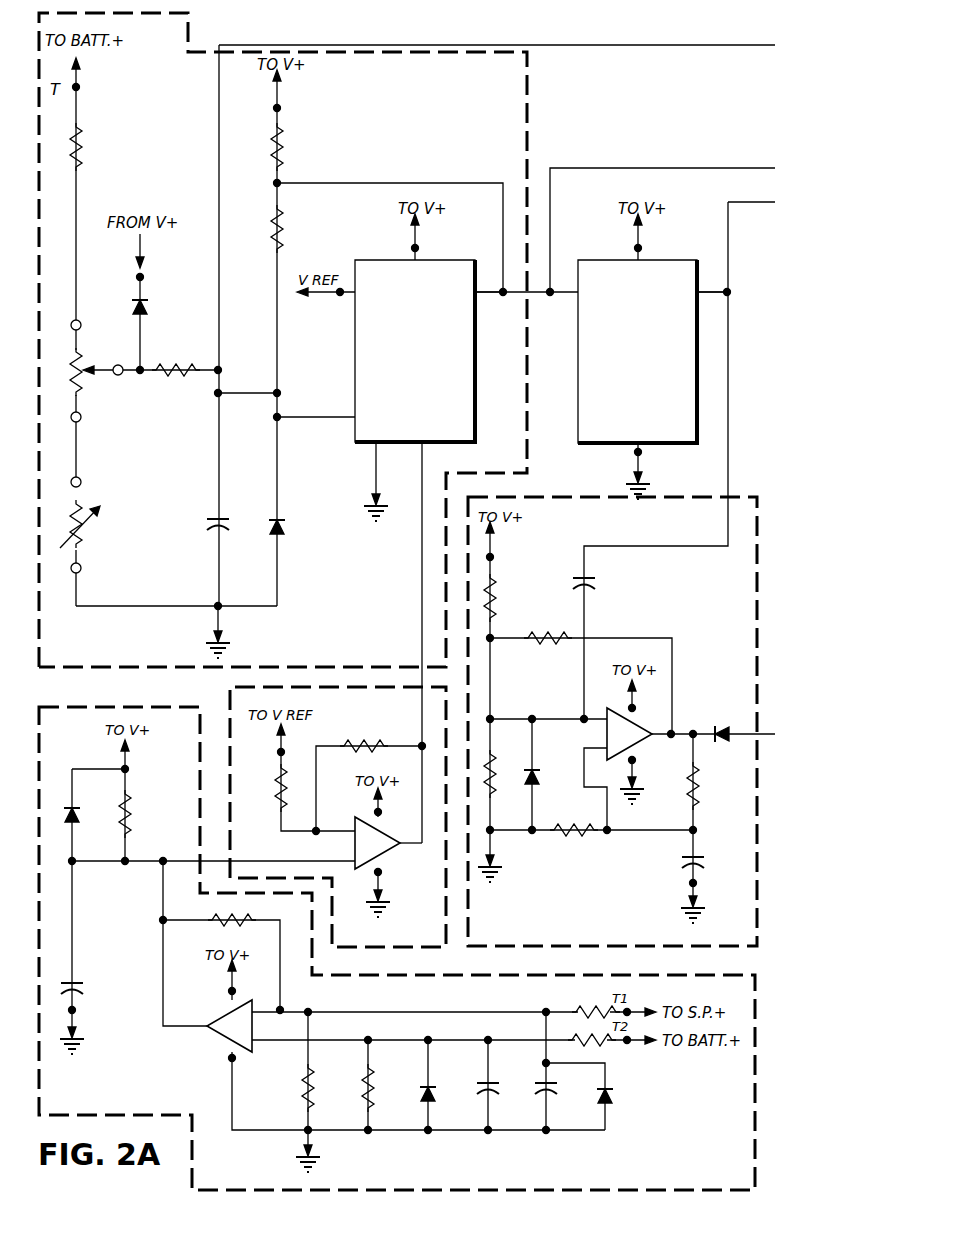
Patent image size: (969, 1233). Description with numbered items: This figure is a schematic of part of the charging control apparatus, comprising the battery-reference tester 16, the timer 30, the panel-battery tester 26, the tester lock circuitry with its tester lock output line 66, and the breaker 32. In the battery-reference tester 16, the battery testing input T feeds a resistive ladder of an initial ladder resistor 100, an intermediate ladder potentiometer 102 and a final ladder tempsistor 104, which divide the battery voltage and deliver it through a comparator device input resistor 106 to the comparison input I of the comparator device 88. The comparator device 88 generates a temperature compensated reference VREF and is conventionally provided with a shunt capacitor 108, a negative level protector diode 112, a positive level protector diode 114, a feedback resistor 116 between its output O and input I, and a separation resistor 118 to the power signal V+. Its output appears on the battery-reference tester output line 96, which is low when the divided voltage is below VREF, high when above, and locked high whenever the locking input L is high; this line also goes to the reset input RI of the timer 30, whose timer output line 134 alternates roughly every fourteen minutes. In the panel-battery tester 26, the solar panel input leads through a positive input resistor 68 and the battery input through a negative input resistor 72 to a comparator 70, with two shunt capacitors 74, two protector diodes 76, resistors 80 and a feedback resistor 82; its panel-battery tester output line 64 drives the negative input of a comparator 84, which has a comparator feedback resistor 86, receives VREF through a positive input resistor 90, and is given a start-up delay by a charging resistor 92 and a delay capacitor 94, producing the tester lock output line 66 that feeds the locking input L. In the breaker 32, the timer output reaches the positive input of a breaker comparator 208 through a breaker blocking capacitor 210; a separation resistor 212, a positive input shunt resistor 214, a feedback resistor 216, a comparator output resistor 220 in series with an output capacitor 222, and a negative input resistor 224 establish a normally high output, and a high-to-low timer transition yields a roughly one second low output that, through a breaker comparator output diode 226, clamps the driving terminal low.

The battery-reference tester 16 is at (530, 118).
The panel-battery tester 26 is at (212, 1190).
The timer 30 is at (672, 445).
The breaker 32 is at (740, 498).
The panel-battery tester output line 64 is at (183, 860).
The tester lock output line 66 is at (420, 706).
The positive input resistor 68 is at (580, 1006).
The comparator 70 is at (222, 1042).
The negative input resistor 72 is at (608, 1048).
The shunt capacitors 74 is at (478, 1090).
The protector diodes 76 is at (418, 1095).
The resistors 80 is at (364, 1098).
The feedback resistor 82 is at (206, 926).
The comparator 84 is at (385, 853).
The comparator feedback resistor 86 is at (362, 745).
The comparator device 88 is at (352, 366).
The positive input resistor 90 is at (276, 797).
The charging resistor 92 is at (132, 832).
The delay capacitor 94 is at (84, 992).
The battery-reference tester output line 96 is at (492, 297).
The initial ladder resistor 100 is at (82, 150).
The intermediate ladder potentiometer 102 is at (82, 394).
The final ladder tempsistor 104 is at (86, 541).
The comparator device input resistor 106 is at (178, 367).
The shunt capacitor 108 is at (214, 518).
The negative level protector diode 112 is at (287, 532).
The positive level protector diode 114 is at (146, 306).
The feedback resistor 116 is at (291, 229).
The separation resistor 118 is at (291, 141).
The timer output line 134 is at (708, 288).
The breaker comparator 208 is at (640, 742).
The breaker blocking capacitor 210 is at (598, 588).
The separation resistor 212 is at (498, 603).
The positive input shunt resistor 214 is at (491, 796).
The feedback resistor 216 is at (540, 650).
The comparator output resistor 220 is at (699, 800).
The output capacitor 222 is at (705, 866).
The negative input resistor 224 is at (573, 838).
The breaker comparator output diode 226 is at (722, 725).